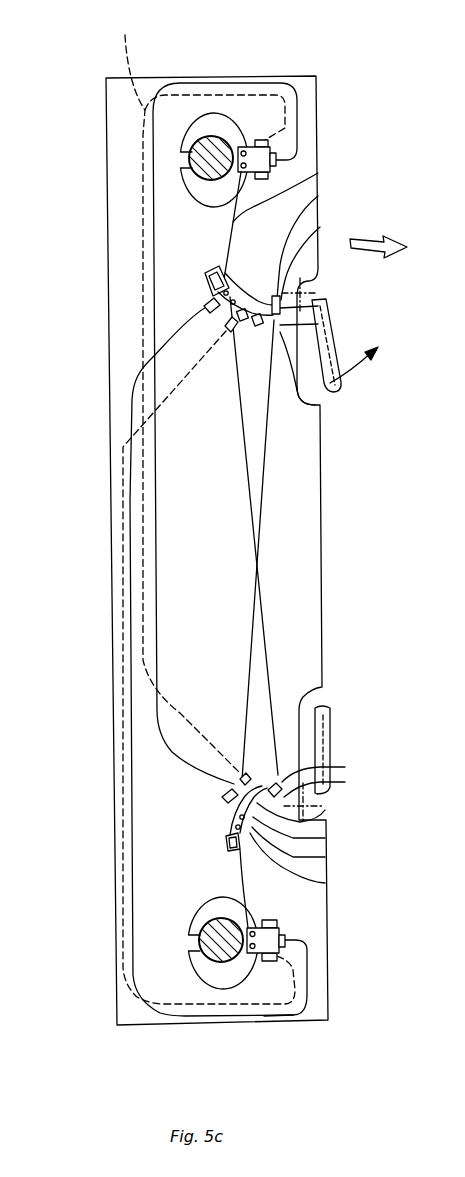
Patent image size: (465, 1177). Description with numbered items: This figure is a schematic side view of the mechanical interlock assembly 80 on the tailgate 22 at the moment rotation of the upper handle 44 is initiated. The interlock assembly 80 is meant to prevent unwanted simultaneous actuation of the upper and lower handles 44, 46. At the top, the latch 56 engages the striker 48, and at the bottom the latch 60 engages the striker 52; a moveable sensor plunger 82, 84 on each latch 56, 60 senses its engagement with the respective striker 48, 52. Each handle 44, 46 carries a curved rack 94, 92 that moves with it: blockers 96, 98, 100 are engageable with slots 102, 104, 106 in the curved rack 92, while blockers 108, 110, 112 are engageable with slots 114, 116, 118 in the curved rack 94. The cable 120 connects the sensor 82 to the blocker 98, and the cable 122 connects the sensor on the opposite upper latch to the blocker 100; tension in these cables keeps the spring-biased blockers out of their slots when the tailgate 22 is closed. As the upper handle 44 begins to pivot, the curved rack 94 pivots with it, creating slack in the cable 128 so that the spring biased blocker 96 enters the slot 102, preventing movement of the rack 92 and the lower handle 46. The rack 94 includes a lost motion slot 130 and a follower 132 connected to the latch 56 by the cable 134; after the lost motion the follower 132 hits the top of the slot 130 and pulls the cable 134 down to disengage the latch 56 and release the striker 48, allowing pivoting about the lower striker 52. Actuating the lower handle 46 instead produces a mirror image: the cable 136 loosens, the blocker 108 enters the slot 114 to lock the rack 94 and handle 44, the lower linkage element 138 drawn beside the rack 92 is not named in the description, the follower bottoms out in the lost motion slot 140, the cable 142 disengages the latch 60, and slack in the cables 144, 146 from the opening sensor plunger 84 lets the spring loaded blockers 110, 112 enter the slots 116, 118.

The tailgate 22 is at (322, 489).
The upper handle 44 is at (340, 349).
The lower handle 46 is at (331, 748).
The striker 48 is at (192, 157).
The striker 52 is at (199, 934).
The latch 56 is at (212, 113).
The latch 60 is at (222, 982).
The mechanical interlock assembly 80 is at (306, 74).
The sensor plunger 82 is at (278, 162).
The sensor plunger 84 is at (296, 940).
The curved rack 92 is at (283, 837).
The curved rack 94 is at (318, 196).
The blocker 96 is at (306, 823).
The blocker 98 is at (228, 796).
The blocker 100 is at (246, 780).
The slot 102 is at (273, 778).
The slot 104 is at (252, 832).
The slot 106 is at (300, 832).
The blocker 108 is at (320, 227).
The blocker 110 is at (133, 370).
The blocker 112 is at (226, 317).
The slot 114 is at (316, 403).
The slot 116 is at (297, 400).
The slot 118 is at (241, 342).
The cable 120 is at (190, 83).
The cable 122 is at (197, 393).
The cable 128 is at (252, 471).
The lost motion slot 130 is at (207, 278).
The follower 132 is at (208, 303).
The cable 134 is at (318, 173).
The cable 136 is at (256, 635).
The lower buckle rail 138 is at (236, 822).
The lost motion slot 140 is at (228, 842).
The cable 142 is at (252, 880).
The cable 144 is at (295, 993).
The cable 146 is at (265, 1017).